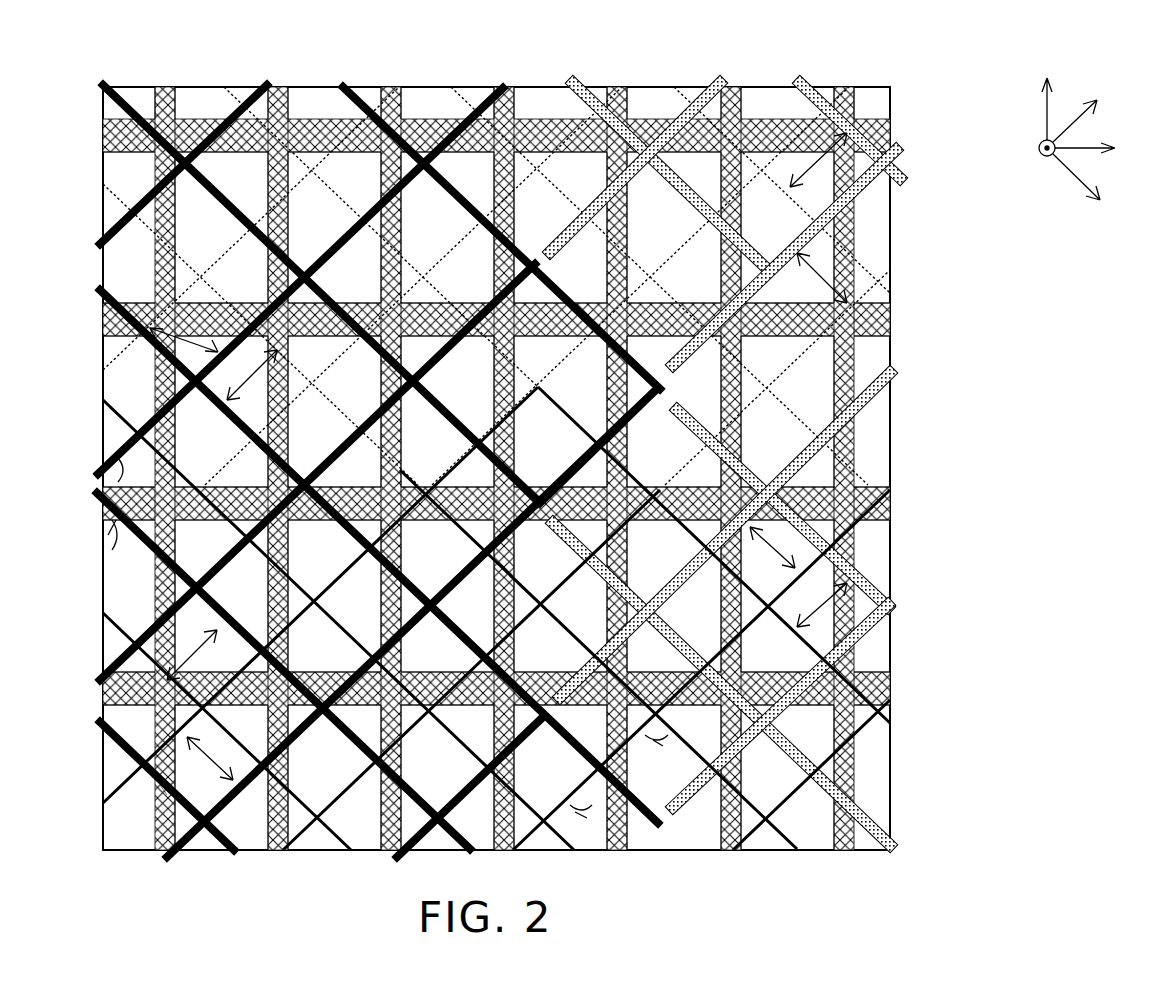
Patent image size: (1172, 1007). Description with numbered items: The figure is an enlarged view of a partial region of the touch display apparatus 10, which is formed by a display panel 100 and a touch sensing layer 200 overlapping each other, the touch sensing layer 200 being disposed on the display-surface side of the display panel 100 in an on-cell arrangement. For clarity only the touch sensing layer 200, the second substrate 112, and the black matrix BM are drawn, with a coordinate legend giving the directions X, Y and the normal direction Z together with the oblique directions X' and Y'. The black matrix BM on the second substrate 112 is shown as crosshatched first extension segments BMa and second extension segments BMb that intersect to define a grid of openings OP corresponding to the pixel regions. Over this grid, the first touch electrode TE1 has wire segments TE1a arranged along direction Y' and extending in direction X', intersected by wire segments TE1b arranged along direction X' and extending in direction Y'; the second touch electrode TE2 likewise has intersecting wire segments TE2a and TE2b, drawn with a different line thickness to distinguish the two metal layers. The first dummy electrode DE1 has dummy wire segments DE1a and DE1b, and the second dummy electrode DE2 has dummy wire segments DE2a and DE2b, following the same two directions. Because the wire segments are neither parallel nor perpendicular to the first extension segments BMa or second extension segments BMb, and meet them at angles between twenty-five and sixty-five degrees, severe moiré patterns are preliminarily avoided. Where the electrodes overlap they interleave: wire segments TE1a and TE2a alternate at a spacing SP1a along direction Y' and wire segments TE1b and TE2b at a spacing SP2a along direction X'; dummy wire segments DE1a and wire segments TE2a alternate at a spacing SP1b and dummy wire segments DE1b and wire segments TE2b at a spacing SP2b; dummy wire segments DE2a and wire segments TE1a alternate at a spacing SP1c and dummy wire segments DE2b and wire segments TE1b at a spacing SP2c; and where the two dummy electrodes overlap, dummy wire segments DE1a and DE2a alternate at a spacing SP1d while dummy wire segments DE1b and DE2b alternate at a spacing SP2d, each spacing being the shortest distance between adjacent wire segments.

The second substrate 112 is at (875, 800).
The black matrix BM is at (562, 468).
The first extension segments BMa is at (848, 728).
The second extension segments BMb is at (868, 689).
The openings OP is at (828, 820).
The first dummy electrode DE1 is at (572, 286).
The dummy wire segments DE1a is at (800, 420).
The dummy wire segments DE1b is at (800, 373).
The second dummy electrode DE2 is at (725, 425).
The dummy wire segments DE2a is at (630, 135).
The dummy wire segments DE2b is at (700, 108).
The first touch electrode TE1 is at (496, 657).
The wire segments TE1a is at (318, 819).
The wire segments TE1b is at (345, 795).
The second touch electrode TE2 is at (378, 431).
The wire segments TE2a is at (150, 47).
The wire segments TE2b is at (238, 110).
The spacing SP1a is at (170, 665).
The spacing SP1b is at (225, 402).
The spacing SP1c is at (800, 622).
The spacing SP1d is at (850, 190).
The spacing SP2a is at (160, 786).
The spacing SP2b is at (150, 345).
The spacing SP2c is at (775, 545).
The spacing SP2d is at (845, 268).
The touch sensing layer 200 is at (1103, 258).
The display panel 100 is at (1103, 400).
The touch display apparatus 10 is at (1030, 874).
The direction X is at (1095, 149).
The direction Y is at (1044, 94).
The direction Z is at (1034, 149).
The direction X' is at (1086, 192).
The direction Y' is at (1085, 107).